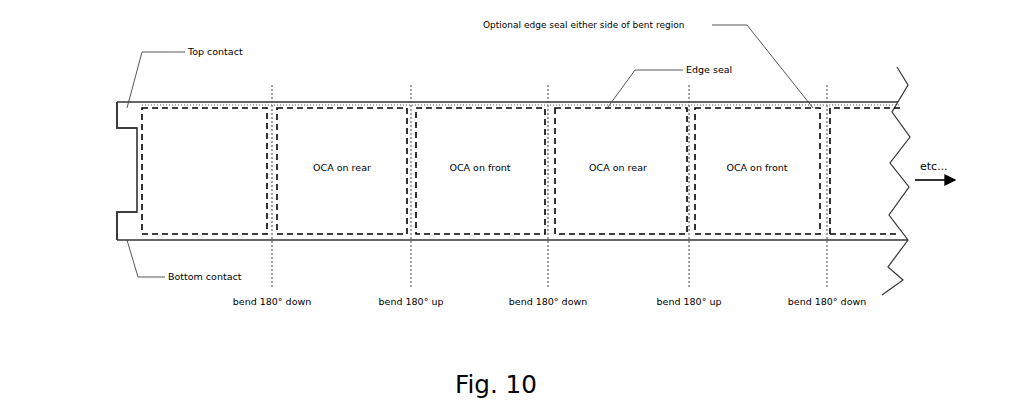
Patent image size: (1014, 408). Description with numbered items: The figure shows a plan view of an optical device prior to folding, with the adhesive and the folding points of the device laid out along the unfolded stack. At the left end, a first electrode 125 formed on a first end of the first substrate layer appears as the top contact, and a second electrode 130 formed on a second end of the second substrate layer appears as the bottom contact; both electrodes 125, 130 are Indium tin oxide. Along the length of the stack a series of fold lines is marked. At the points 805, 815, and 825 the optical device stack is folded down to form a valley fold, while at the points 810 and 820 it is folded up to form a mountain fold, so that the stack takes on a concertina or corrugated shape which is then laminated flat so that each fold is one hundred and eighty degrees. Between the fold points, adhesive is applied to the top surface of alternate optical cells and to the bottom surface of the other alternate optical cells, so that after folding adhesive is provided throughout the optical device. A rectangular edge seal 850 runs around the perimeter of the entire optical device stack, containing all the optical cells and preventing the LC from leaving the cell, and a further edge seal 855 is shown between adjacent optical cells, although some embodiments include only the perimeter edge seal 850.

The first electrode 125 is at (117, 119).
The second electrode 130 is at (117, 221).
The fold point 805 is at (272, 172).
The fold point 810 is at (405, 172).
The fold point 815 is at (547, 172).
The fold point 820 is at (685, 164).
The fold point 825 is at (826, 173).
The rectangular edge seal 850 is at (373, 103).
The further edge seal 855 is at (270, 208).